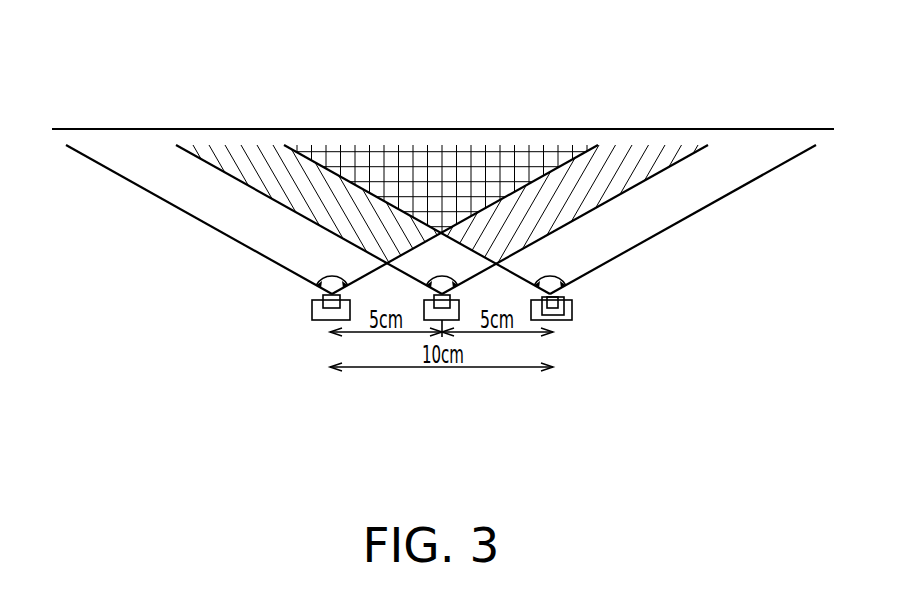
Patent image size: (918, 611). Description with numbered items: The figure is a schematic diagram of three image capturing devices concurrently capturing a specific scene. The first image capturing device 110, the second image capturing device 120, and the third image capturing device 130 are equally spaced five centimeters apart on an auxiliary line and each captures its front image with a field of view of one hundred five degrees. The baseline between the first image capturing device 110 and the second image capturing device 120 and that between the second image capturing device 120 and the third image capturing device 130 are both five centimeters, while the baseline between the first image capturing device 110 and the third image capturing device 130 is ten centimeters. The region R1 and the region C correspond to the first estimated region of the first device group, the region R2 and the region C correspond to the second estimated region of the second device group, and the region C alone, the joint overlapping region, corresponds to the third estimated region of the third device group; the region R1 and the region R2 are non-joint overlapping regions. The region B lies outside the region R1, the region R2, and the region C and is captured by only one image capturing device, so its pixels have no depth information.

The first image capturing device 110 is at (327, 321).
The second image capturing device 120 is at (428, 321).
The third image capturing device 130 is at (560, 321).
The region B is at (270, 240).
The region C is at (462, 177).
The region R1 is at (268, 170).
The region R2 is at (632, 160).